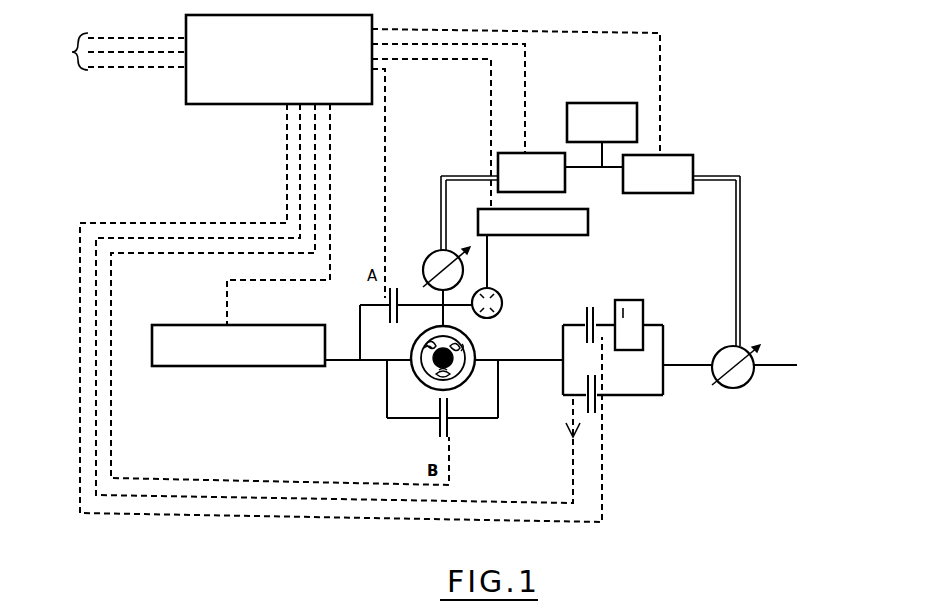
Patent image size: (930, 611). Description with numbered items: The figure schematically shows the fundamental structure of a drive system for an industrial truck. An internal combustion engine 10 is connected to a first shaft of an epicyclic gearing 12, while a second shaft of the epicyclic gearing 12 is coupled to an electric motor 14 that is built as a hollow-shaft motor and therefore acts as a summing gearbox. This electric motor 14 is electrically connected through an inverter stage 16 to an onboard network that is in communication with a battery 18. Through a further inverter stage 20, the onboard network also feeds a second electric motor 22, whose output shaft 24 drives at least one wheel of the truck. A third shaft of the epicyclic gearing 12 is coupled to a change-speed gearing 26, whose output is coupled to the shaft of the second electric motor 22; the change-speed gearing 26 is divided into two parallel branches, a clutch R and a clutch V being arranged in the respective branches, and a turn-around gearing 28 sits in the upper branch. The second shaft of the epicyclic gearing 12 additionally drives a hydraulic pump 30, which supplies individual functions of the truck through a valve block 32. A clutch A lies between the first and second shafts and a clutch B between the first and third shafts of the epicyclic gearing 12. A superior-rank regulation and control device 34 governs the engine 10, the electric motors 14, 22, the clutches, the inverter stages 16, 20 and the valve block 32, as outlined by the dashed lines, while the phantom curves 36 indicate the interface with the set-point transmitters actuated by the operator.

The internal combustion engine 10 is at (258, 362).
The epicyclic gearing 12 is at (478, 352).
The electric motor 14 is at (434, 253).
The inverter stage 16 is at (535, 162).
The battery 18 is at (600, 113).
The inverter stage 20 is at (680, 168).
The second electric motor 22 is at (735, 389).
The output shaft 24 is at (784, 364).
The change-speed gearing 26 is at (651, 400).
The turn-around gearing 28 is at (640, 312).
The hydraulic pump 30 is at (502, 297).
The valve block 32 is at (588, 222).
The regulation and control device 34 is at (300, 71).
The phantom curves 36 is at (72, 52).